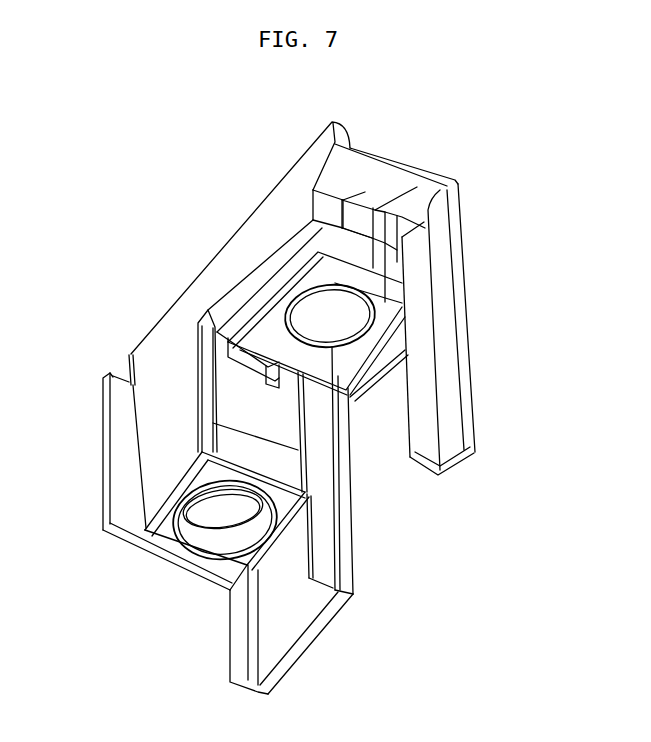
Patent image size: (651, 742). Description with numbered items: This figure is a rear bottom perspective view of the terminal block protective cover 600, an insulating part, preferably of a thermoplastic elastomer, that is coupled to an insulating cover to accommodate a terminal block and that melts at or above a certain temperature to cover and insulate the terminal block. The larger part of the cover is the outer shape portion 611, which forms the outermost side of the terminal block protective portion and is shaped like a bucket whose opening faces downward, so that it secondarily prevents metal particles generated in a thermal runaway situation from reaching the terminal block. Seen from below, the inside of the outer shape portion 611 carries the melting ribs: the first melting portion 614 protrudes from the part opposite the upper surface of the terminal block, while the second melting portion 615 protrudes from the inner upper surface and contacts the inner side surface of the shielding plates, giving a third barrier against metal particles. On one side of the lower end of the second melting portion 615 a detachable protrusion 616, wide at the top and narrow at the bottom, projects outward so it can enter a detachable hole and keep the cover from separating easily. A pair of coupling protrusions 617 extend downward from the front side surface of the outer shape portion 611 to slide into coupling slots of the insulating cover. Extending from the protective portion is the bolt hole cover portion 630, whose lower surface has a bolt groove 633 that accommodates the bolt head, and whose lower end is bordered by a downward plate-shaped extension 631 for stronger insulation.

The terminal block protective cover 600 is at (138, 213).
The outer shape portion 611 is at (263, 227).
The first melting portion 614 is at (405, 302).
The second melting portion 615 is at (278, 296).
The detachable protrusion 616 is at (377, 207).
The coupling protrusion 617 is at (427, 450).
The bolt hole cover portion 630 is at (167, 443).
The plate-shaped extension 631 is at (248, 622).
The bolt groove 633 is at (230, 492).